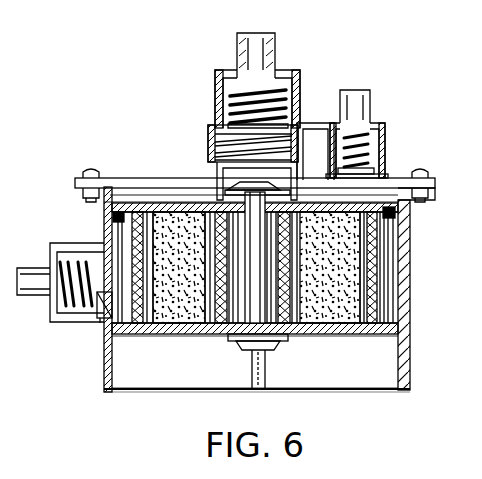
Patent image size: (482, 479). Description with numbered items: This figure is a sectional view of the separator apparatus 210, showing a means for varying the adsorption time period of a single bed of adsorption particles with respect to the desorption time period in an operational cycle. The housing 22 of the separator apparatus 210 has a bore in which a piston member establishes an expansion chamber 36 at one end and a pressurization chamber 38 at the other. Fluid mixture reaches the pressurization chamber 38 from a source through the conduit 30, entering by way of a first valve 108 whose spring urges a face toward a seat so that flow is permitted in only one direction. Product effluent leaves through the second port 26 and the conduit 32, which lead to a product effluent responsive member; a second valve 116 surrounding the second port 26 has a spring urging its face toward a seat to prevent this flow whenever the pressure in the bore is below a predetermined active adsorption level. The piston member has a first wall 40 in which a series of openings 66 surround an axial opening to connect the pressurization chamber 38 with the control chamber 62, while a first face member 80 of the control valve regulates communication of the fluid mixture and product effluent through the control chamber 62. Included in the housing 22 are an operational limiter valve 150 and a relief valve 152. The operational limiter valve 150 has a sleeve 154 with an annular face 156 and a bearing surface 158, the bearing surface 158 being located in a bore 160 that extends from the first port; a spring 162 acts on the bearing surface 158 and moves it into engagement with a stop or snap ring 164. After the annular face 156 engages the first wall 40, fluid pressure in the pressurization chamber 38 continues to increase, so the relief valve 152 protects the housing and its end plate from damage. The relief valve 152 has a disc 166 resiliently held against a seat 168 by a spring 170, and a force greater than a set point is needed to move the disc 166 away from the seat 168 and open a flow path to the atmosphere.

The housing 22 is at (144, 356).
The second port 26 is at (97, 320).
The conduit 30 is at (276, 42).
The conduit 32 is at (40, 298).
The expansion chamber 36 is at (198, 369).
The pressurization chamber 38 is at (88, 178).
The first wall 40 is at (148, 198).
The control chamber 62 is at (228, 336).
The openings 66 is at (263, 244).
The first face member 80 is at (204, 196).
The first valve 108 is at (297, 70).
The second valve 116 is at (66, 324).
The operational limiter valve 150 is at (175, 200).
The relief valve 152 is at (402, 161).
The sleeve 154 is at (183, 200).
The annular face 156 is at (160, 196).
The bearing surface 158 is at (195, 195).
The bore 160 is at (322, 128).
The spring 162 is at (297, 160).
The snap ring 164 is at (251, 195).
The disc 166 is at (370, 175).
The seat 168 is at (388, 188).
The spring 170 is at (358, 160).
The separator apparatus 210 is at (79, 386).